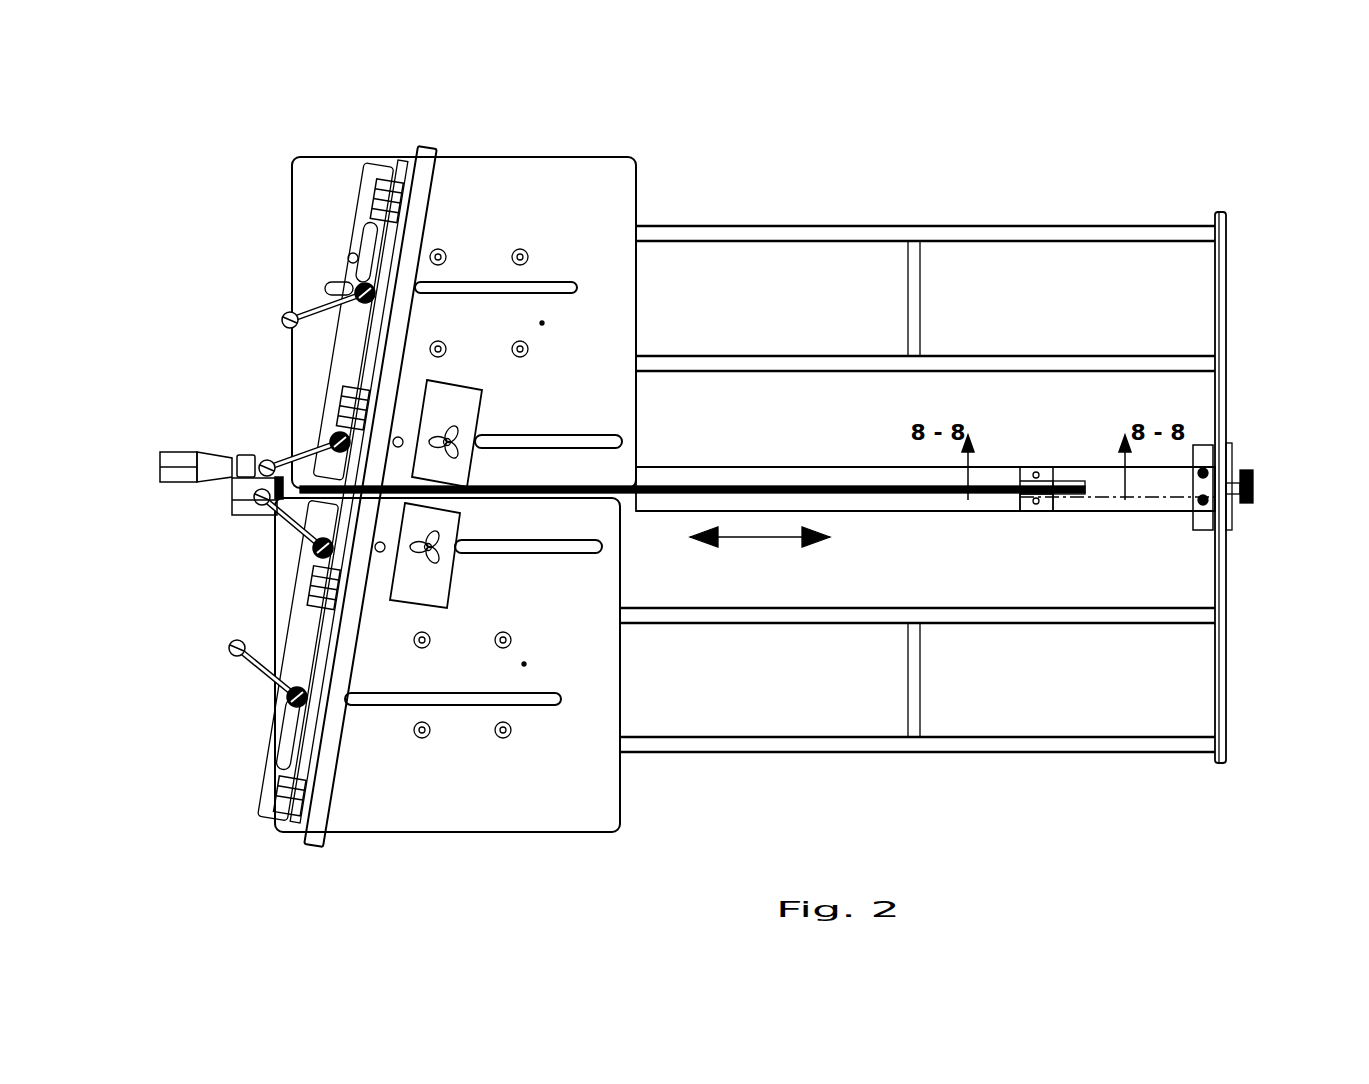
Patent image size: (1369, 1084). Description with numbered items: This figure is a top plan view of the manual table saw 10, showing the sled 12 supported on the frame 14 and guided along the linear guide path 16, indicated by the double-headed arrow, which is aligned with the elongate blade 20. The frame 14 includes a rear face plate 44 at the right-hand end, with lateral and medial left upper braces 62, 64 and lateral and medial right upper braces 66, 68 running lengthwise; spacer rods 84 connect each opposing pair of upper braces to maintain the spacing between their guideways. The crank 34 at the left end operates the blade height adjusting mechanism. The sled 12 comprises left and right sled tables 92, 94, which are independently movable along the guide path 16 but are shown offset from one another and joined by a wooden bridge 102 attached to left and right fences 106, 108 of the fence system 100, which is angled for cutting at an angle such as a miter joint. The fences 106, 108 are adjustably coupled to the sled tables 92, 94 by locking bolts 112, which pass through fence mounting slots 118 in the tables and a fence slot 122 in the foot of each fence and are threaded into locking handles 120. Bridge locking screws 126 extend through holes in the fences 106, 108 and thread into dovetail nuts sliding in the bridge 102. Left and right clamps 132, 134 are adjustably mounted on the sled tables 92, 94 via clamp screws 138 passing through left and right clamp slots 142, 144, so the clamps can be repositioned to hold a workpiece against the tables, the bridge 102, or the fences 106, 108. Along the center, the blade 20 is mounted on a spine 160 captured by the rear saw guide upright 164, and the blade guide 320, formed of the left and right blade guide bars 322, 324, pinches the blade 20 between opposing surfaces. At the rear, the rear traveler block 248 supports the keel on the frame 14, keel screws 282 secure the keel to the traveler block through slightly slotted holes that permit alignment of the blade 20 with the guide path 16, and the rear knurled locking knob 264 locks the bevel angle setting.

The manual table saw 10 is at (1110, 148).
The sled 12 is at (505, 118).
The frame 14 is at (1160, 760).
The guide path 16 is at (768, 540).
The blade 20 is at (680, 487).
The crank 34 is at (200, 473).
The rear face plate 44 is at (1225, 680).
The lateral left upper brace 62 is at (1072, 228).
The medial left upper brace 64 is at (1083, 357).
The lateral right upper brace 66 is at (1113, 737).
The medial right upper brace 68 is at (1110, 620).
The spacer rods 84 is at (913, 320).
The left sled table 92 is at (590, 180).
The right sled table 94 is at (620, 810).
The fence system 100 is at (277, 100).
The bridge 102 is at (350, 645).
The left fence 106 is at (375, 357).
The right fence 108 is at (320, 775).
The locking bolts 112 is at (350, 283).
The fence mounting slots 118 is at (555, 287).
The locking handles 120 is at (328, 298).
The fence slot 122 is at (372, 240).
The bridge locking screws 126 is at (388, 185).
The left clamp 132 is at (462, 402).
The right clamp 134 is at (430, 590).
The clamp screws 138 is at (452, 432).
The left clamp slot 142 is at (552, 437).
The right clamp slot 144 is at (550, 550).
The spine 160 is at (1077, 482).
The rear saw guide upright 164 is at (1025, 510).
The rear traveler block 248 is at (1198, 522).
The rear knurled locking knob 264 is at (1258, 490).
The keel screws 282 is at (1195, 473).
The blade guide 320 is at (782, 470).
The left blade guide bar 322 is at (860, 470).
The right blade guide bar 324 is at (890, 507).